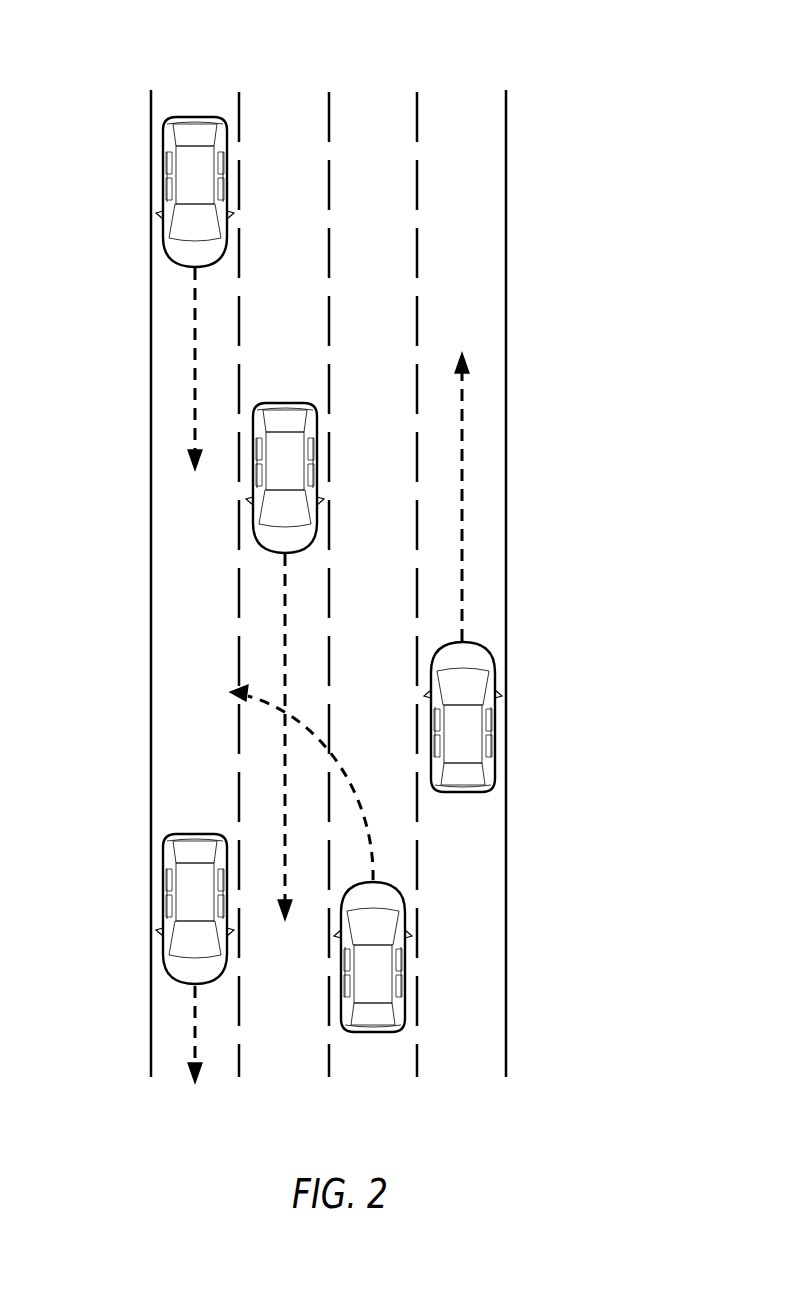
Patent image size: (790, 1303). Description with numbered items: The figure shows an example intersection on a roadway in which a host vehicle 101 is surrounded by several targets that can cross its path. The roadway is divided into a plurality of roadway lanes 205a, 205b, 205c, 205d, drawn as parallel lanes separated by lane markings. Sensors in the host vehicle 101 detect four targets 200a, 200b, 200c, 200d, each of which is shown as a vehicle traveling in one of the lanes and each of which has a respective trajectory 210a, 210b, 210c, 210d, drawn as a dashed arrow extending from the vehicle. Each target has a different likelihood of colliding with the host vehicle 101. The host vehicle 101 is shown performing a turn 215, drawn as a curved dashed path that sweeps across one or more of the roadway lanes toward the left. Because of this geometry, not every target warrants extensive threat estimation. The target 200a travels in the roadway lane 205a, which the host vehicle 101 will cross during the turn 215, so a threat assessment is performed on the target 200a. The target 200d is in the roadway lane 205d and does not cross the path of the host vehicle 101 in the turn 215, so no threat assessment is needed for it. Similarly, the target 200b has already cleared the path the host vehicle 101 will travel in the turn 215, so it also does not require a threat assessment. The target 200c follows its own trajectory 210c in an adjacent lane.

The host vehicle 101 is at (406, 973).
The target 200a is at (166, 158).
The target 200b is at (166, 872).
The target 200c is at (315, 438).
The target 200d is at (494, 755).
The roadway lane 205a is at (195, 95).
The roadway lane 205b is at (283, 95).
The roadway lane 205c is at (370, 95).
The roadway lane 205d is at (463, 95).
The trajectory 210a is at (193, 388).
The trajectory 210b is at (193, 1032).
The trajectory 210c is at (288, 628).
The trajectory 210d is at (462, 520).
The turn 215 is at (355, 785).